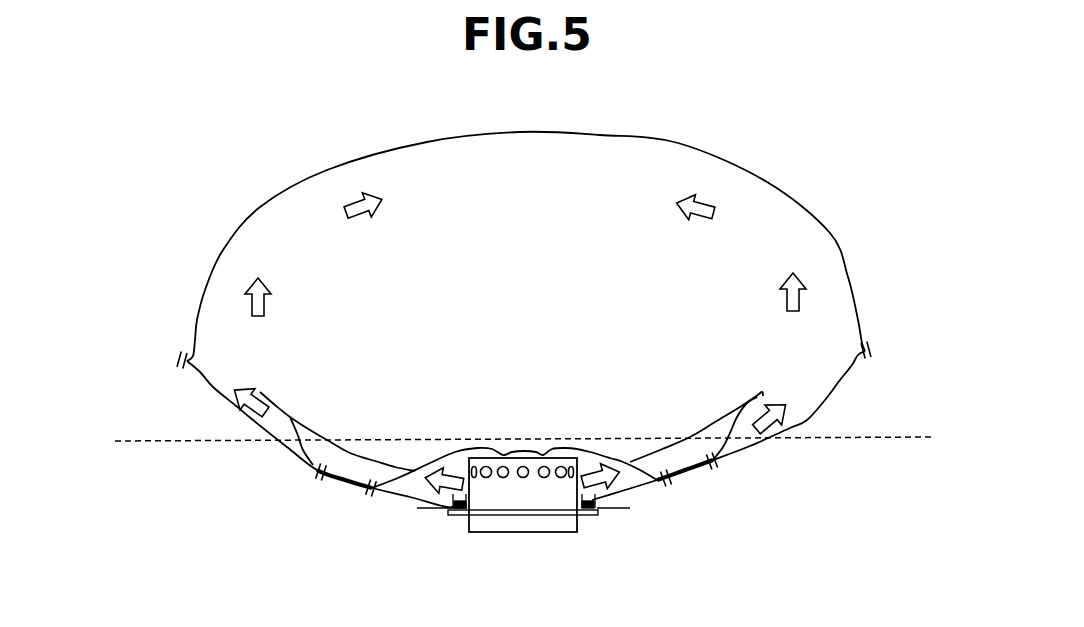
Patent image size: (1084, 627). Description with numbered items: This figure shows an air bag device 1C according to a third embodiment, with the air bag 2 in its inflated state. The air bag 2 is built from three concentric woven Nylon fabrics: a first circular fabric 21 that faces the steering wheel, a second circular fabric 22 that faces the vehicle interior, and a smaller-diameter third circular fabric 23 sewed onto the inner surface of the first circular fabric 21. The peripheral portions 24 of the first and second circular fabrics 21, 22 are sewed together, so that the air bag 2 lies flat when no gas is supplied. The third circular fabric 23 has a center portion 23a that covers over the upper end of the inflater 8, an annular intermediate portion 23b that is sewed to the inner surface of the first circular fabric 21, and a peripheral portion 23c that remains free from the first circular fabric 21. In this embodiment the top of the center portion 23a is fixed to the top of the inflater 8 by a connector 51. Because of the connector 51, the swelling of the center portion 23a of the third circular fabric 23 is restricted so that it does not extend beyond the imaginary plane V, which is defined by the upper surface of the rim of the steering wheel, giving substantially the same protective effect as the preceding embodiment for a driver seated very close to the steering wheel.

The air bag device 1C is at (843, 101).
The air bag 2 is at (548, 295).
The second circular fabric 22 is at (833, 237).
The first circular fabric 21 is at (808, 418).
The peripheral portions 24 is at (870, 350).
The third circular fabric 23 is at (511, 405).
The center portion 23a is at (593, 452).
The annular intermediate portion 23b is at (705, 437).
The peripheral portion 23c is at (287, 410).
The inflater 8 is at (543, 533).
The connector 51 is at (523, 448).
The imaginary plane V is at (902, 435).